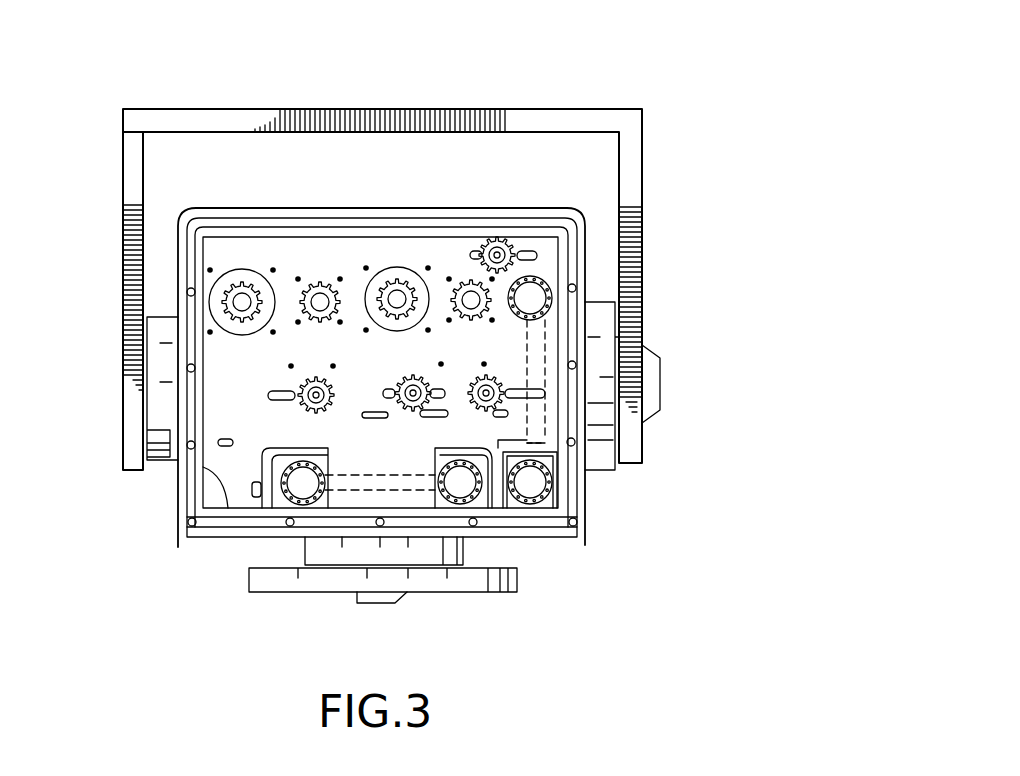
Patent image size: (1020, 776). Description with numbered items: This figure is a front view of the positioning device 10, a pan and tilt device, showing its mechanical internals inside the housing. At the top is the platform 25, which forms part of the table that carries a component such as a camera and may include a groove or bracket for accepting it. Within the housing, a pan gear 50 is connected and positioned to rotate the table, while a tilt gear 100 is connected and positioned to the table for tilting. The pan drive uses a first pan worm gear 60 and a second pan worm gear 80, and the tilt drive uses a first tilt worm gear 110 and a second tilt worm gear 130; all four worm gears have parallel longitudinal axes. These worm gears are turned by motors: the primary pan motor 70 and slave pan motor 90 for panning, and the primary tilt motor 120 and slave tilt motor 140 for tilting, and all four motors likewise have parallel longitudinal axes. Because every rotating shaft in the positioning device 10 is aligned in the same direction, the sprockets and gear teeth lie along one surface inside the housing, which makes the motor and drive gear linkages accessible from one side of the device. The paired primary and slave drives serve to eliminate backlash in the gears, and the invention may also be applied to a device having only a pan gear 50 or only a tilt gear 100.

The positioning device 10 is at (712, 170).
The platform 25 is at (578, 120).
The pan gear 50 is at (352, 480).
The first pan worm gear 60 is at (295, 485).
The primary pan motor 70 is at (242, 302).
The second pan worm gear 80 is at (458, 482).
The slave pan motor 90 is at (320, 300).
The tilt gear 100 is at (530, 445).
The first tilt worm gear 110 is at (532, 297).
The primary tilt motor 120 is at (397, 299).
The second tilt worm gear 130 is at (532, 483).
The slave tilt motor 140 is at (471, 300).